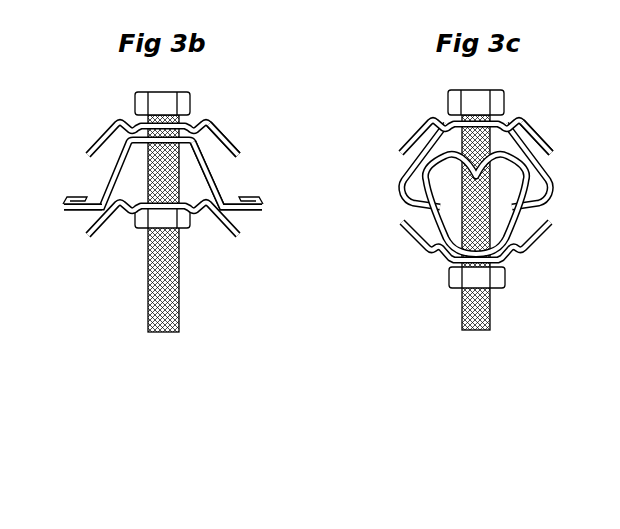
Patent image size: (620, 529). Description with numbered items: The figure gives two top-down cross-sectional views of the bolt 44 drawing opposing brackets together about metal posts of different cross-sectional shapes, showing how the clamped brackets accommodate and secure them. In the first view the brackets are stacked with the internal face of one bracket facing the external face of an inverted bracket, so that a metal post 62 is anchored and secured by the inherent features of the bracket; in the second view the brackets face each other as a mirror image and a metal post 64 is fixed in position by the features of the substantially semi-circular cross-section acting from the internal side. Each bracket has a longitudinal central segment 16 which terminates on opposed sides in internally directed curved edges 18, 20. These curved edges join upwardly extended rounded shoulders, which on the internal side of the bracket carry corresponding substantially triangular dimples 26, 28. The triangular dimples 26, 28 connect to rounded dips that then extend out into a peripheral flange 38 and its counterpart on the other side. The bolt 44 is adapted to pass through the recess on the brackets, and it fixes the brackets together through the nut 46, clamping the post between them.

In FIG. 3c, the longitudinal central segment 16 is at (494, 100).
In FIG. 3c, the internally directed curved edge 18 is at (443, 120).
In FIG. 3c, the internally directed curved edge 20 is at (510, 120).
In FIG. 3b, the substantially triangular dimple 26 is at (117, 145).
In FIG. 3b, the substantially triangular dimple 28 is at (233, 157).
In FIG. 3b, the peripheral flange 38 is at (88, 152).
In FIG. 3b, the bolt 44 is at (165, 333).
In FIG. 3b, the nut 46 is at (239, 143).
In FIG. 3b, the metal post 62 is at (107, 183).
In FIG. 3c, the metal post 64 is at (400, 201).